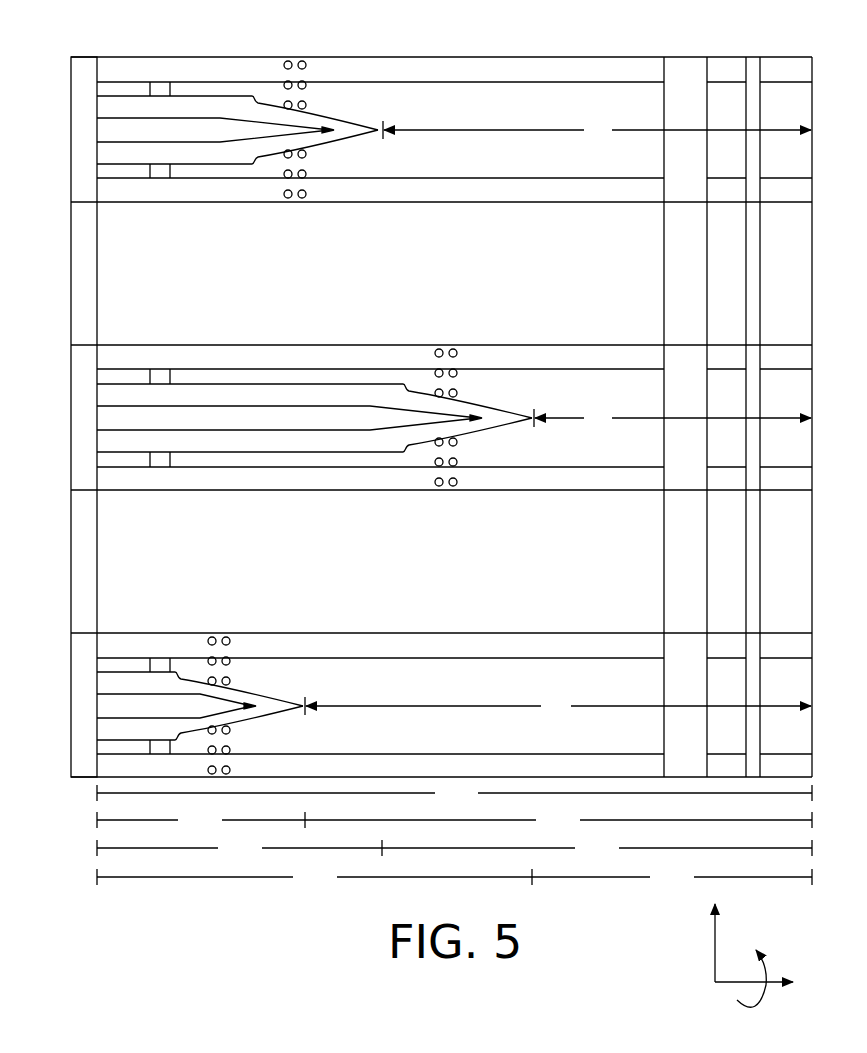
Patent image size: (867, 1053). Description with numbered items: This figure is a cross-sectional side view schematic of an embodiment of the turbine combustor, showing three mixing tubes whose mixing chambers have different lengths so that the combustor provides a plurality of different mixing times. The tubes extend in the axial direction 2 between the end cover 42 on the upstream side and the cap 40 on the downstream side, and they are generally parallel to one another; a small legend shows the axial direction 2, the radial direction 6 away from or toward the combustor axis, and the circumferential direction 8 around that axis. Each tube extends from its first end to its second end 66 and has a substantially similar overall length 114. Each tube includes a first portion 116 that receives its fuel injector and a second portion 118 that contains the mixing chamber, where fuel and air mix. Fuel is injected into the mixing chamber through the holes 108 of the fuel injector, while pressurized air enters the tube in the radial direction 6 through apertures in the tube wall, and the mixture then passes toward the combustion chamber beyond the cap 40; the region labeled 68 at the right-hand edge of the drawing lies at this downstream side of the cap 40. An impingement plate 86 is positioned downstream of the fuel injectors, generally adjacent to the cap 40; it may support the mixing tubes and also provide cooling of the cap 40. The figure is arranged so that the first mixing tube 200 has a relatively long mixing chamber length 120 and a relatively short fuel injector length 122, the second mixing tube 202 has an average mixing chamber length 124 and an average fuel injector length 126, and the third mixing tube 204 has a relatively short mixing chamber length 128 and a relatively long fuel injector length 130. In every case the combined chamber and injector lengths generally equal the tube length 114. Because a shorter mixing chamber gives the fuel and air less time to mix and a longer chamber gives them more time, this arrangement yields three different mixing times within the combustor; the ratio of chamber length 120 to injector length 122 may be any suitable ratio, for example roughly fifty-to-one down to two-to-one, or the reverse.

The axial direction 2 is at (727, 985).
The radial direction 6 is at (713, 949).
The circumferential direction 8 is at (766, 995).
The cap 40 is at (752, 62).
The end cover 42 is at (85, 62).
The second end 66 is at (103, 168).
The combustion zone 68 is at (812, 125).
The impingement plate 86 is at (690, 62).
The holes 108 is at (324, 126).
The length 114 is at (454, 794).
The first portion 116 is at (193, 55).
The second portion 118 is at (490, 57).
The length 120 is at (558, 821).
The length 122 is at (201, 821).
The length 124 is at (597, 849).
The length 126 is at (239, 849).
The length 128 is at (672, 878).
The length 130 is at (314, 878).
The first mixing tube 200 is at (416, 705).
The second mixing tube 202 is at (416, 110).
The third mixing tube 204 is at (416, 417).